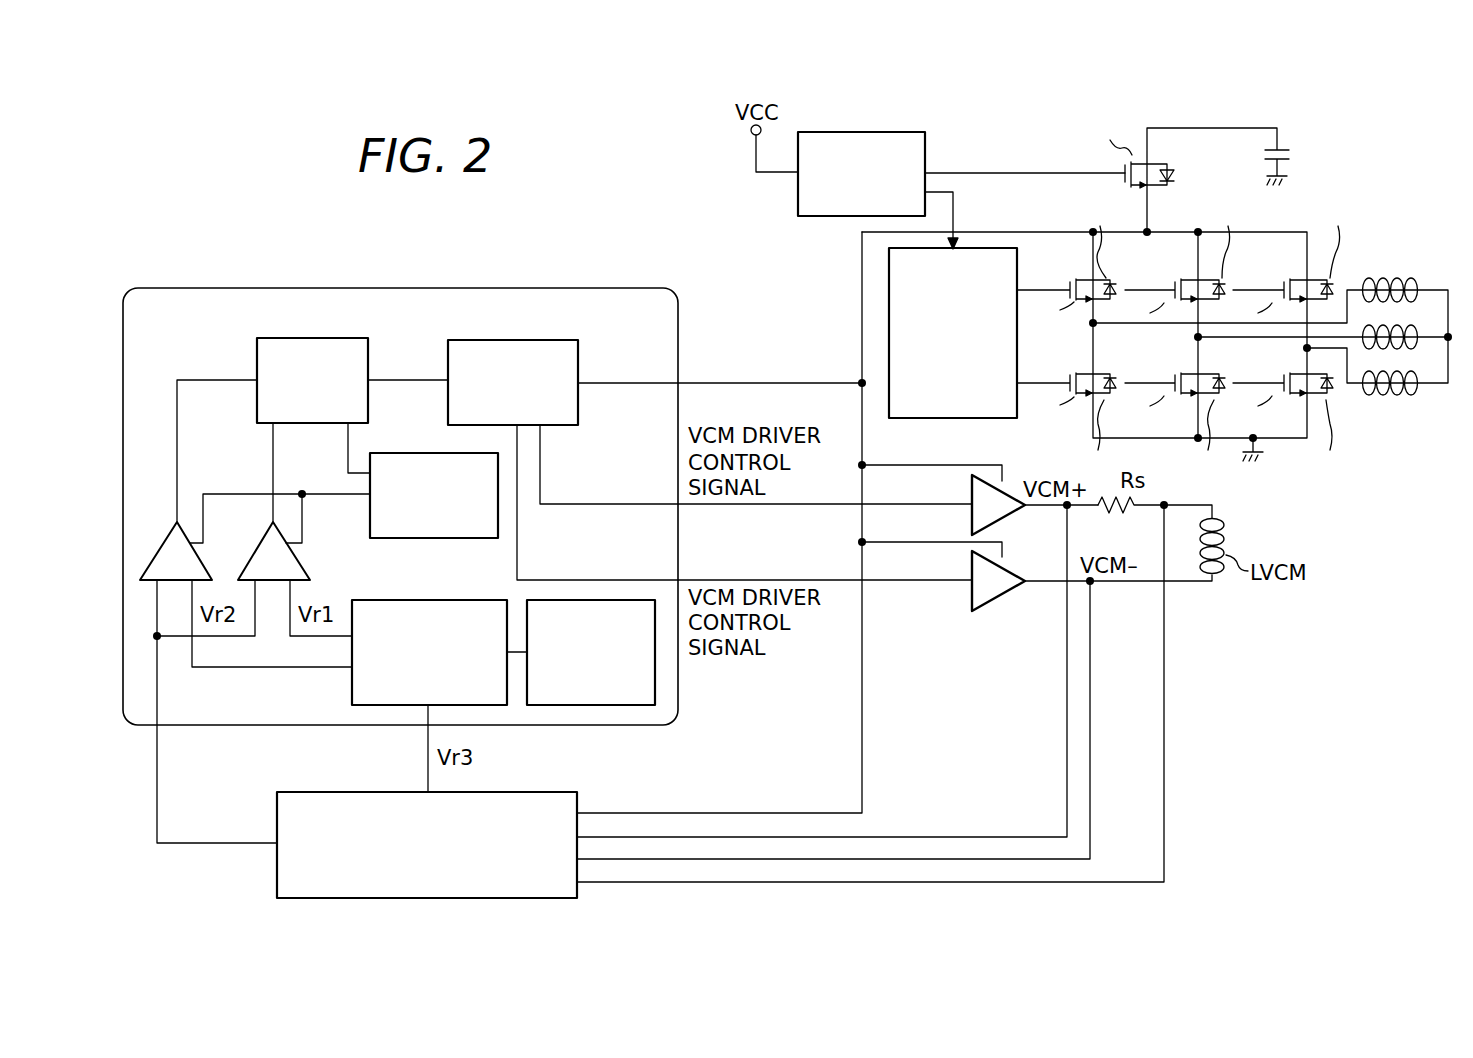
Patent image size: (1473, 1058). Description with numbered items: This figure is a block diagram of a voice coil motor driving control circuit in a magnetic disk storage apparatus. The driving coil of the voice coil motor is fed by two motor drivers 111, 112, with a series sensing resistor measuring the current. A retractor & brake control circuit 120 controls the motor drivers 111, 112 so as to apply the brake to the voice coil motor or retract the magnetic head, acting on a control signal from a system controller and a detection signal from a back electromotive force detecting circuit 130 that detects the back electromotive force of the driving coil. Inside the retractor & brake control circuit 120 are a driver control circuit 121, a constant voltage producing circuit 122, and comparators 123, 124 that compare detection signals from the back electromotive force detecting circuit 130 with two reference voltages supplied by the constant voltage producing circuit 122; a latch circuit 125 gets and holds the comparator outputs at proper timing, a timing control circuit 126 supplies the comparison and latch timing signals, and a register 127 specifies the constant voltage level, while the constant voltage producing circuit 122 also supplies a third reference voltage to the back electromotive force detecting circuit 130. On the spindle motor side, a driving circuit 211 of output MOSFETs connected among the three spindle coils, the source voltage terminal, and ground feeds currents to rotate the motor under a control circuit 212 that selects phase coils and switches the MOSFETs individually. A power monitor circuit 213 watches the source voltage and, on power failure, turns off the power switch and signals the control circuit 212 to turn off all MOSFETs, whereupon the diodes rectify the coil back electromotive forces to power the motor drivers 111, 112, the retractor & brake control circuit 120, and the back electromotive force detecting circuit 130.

The retractor & brake control circuit 120 is at (595, 285).
The driver control circuit 121 is at (539, 340).
The constant voltage producing circuit 122 is at (393, 599).
The comparator 123 is at (248, 547).
The comparator 124 is at (152, 547).
The latch circuit 125 is at (329, 338).
The timing control circuit 126 is at (413, 453).
The register 127 is at (617, 600).
The back electromotive force detecting circuit 130 is at (513, 790).
The motor driver 111 is at (1005, 522).
The motor driver 112 is at (1005, 598).
The driving circuit 211 is at (1284, 470).
The control circuit 212 is at (934, 424).
The power monitor circuit 213 is at (927, 154).